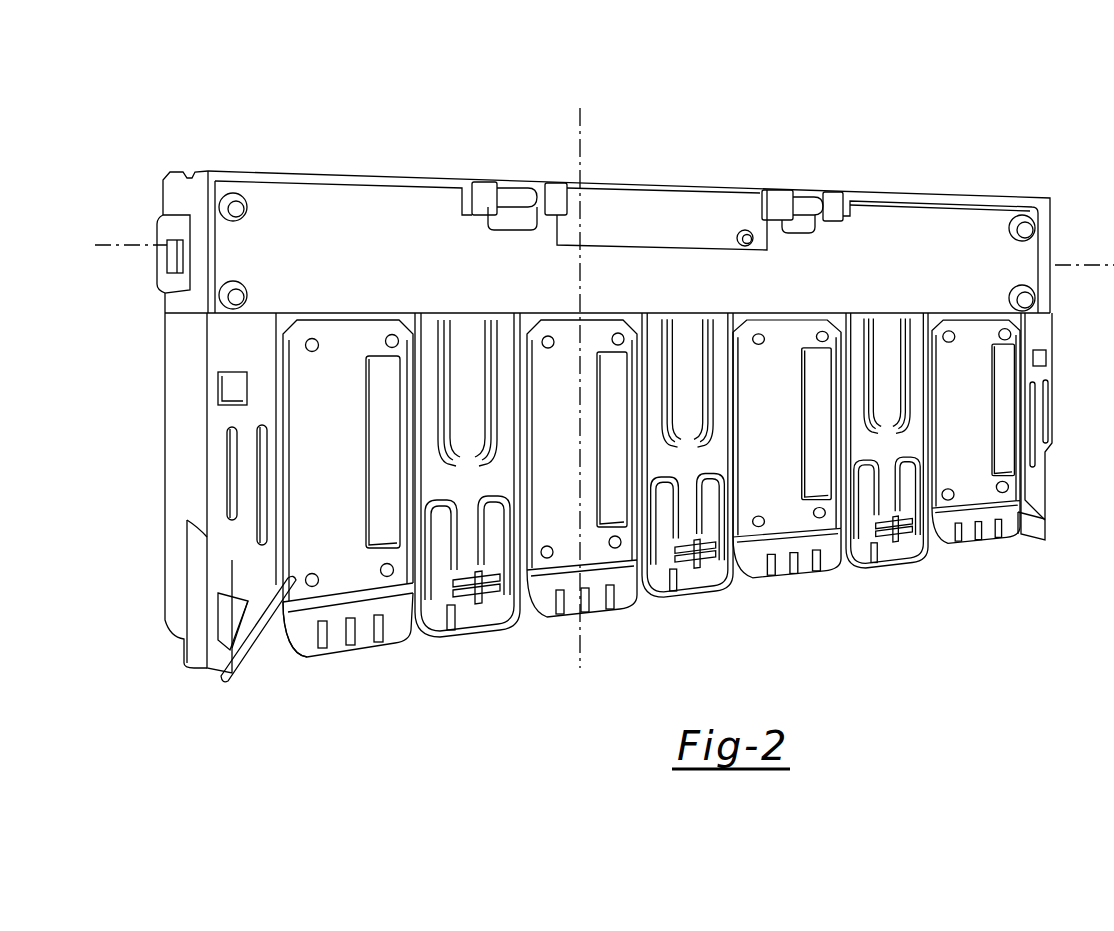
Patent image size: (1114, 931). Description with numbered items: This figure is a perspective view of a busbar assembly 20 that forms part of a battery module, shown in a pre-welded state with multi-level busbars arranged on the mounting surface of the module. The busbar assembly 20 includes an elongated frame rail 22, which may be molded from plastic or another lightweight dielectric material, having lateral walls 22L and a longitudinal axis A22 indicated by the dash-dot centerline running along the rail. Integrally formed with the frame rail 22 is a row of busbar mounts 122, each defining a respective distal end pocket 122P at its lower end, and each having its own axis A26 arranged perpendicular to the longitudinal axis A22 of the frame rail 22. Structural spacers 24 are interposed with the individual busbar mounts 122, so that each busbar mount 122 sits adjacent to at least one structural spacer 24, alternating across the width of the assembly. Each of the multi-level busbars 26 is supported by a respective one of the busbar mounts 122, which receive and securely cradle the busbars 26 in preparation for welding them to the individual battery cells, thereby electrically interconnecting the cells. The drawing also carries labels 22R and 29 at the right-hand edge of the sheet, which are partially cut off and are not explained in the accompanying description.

The busbar assembly 20 is at (961, 111).
The frame rail 22 is at (358, 222).
The lateral walls 22L is at (176, 408).
The right end wall of housing 22R is at (1040, 334).
The structural spacers 24 is at (465, 550).
The multi-level busbars 26 is at (332, 557).
The end bracket 29 is at (1105, 611).
The busbar mounts 122 is at (290, 660).
The distal end pocket 122P is at (222, 679).
The longitudinal axis A22 is at (134, 242).
The busbar mount axis A26 is at (581, 134).